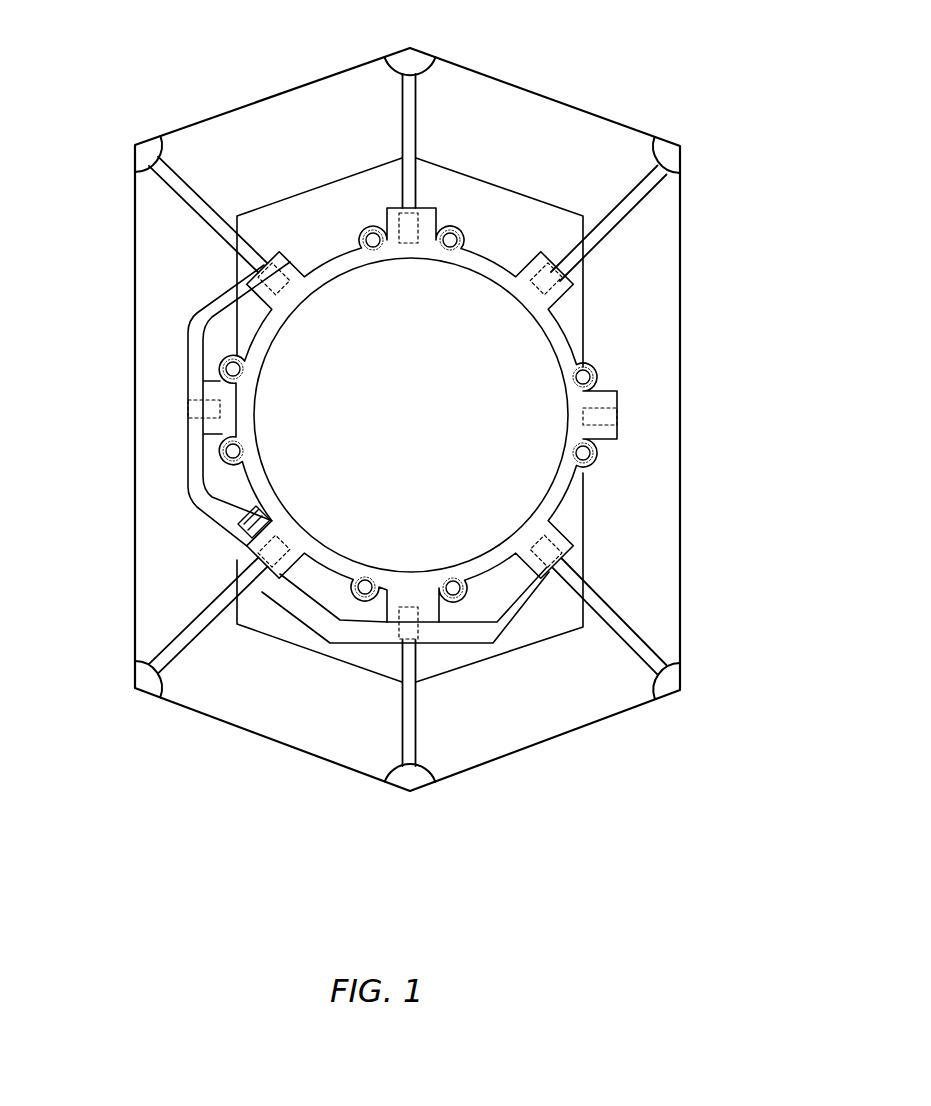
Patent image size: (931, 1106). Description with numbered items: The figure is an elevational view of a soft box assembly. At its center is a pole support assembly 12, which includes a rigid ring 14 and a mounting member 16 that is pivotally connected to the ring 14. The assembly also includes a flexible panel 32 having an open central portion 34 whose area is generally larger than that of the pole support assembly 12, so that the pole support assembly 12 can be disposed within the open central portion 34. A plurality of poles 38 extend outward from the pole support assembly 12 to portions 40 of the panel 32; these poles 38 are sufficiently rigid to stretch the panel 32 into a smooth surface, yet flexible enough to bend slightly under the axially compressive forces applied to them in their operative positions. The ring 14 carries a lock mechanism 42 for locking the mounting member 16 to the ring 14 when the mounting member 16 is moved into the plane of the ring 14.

The pole support assembly 12 is at (498, 238).
The rigid ring 14 is at (530, 318).
The mounting member 16 is at (500, 642).
The flexible panel 32 is at (660, 322).
The open central portion 34 is at (455, 195).
The poles 38 is at (193, 183).
The portions of the panel 40 is at (418, 50).
The lock mechanism 42 is at (258, 522).